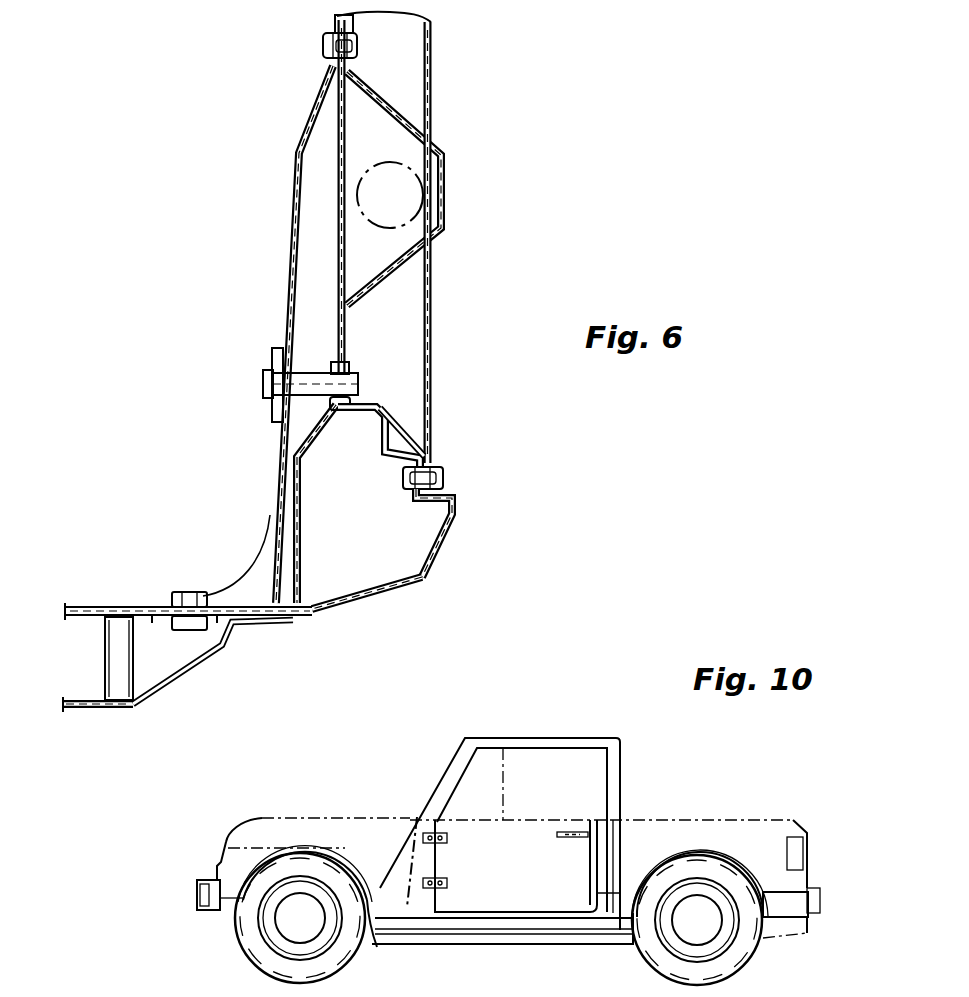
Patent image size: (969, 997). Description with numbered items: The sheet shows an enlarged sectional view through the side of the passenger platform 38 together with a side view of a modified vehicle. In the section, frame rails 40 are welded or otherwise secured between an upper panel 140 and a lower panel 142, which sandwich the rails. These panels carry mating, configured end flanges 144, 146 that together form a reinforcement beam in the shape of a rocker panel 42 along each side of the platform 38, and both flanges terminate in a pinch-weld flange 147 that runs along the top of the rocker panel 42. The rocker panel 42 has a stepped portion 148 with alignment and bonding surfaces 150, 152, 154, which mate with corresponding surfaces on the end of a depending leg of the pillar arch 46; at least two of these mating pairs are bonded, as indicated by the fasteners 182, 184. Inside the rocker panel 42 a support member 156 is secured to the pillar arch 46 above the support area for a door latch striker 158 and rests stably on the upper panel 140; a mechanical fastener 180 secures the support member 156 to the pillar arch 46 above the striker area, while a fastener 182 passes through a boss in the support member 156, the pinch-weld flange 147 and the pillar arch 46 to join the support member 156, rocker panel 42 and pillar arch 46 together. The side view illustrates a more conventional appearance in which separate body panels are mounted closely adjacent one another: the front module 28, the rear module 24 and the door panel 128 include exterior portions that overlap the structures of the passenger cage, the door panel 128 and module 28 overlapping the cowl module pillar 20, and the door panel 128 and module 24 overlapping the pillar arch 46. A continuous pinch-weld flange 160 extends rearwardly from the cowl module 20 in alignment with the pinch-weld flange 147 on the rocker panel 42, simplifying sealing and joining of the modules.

In FIG. 10, the cowl module pillar 20 is at (405, 823).
In FIG. 10, the module 24 is at (809, 835).
In FIG. 10, the module 28 is at (249, 822).
In FIG. 6, the passenger platform 38 is at (174, 642).
In FIG. 6, the rails 40 is at (102, 680).
In FIG. 6, the rocker panel 42 is at (462, 522).
In FIG. 6, the pillar arch 46 is at (452, 92).
In FIG. 10, the pillar arch 46 is at (625, 759).
In FIG. 10, the door panel 128 is at (504, 748).
In FIG. 6, the upper panel 140 is at (147, 607).
In FIG. 6, the panel 142 is at (210, 660).
In FIG. 6, the end flange 144 is at (293, 483).
In FIG. 6, the end flange 146 is at (411, 588).
In FIG. 6, the pinch-weld flange 147 is at (333, 368).
In FIG. 10, the pinch-weld flange 147 is at (533, 910).
In FIG. 6, the stepped portion 148 is at (397, 443).
In FIG. 6, the alignment and bonding surface 150 is at (348, 371).
In FIG. 6, the alignment and bonding surface 152 is at (363, 398).
In FIG. 6, the alignment and bonding surface 154 is at (427, 457).
In FIG. 6, the support member 156 is at (290, 215).
In FIG. 6, the door latch striker support area 158 is at (427, 193).
In FIG. 10, the pinch-weld flange 160 is at (430, 852).
In FIG. 6, the mechanical fastener 180 is at (323, 47).
In FIG. 6, the fastener 182 is at (263, 375).
In FIG. 6, the fastener 184 is at (443, 478).